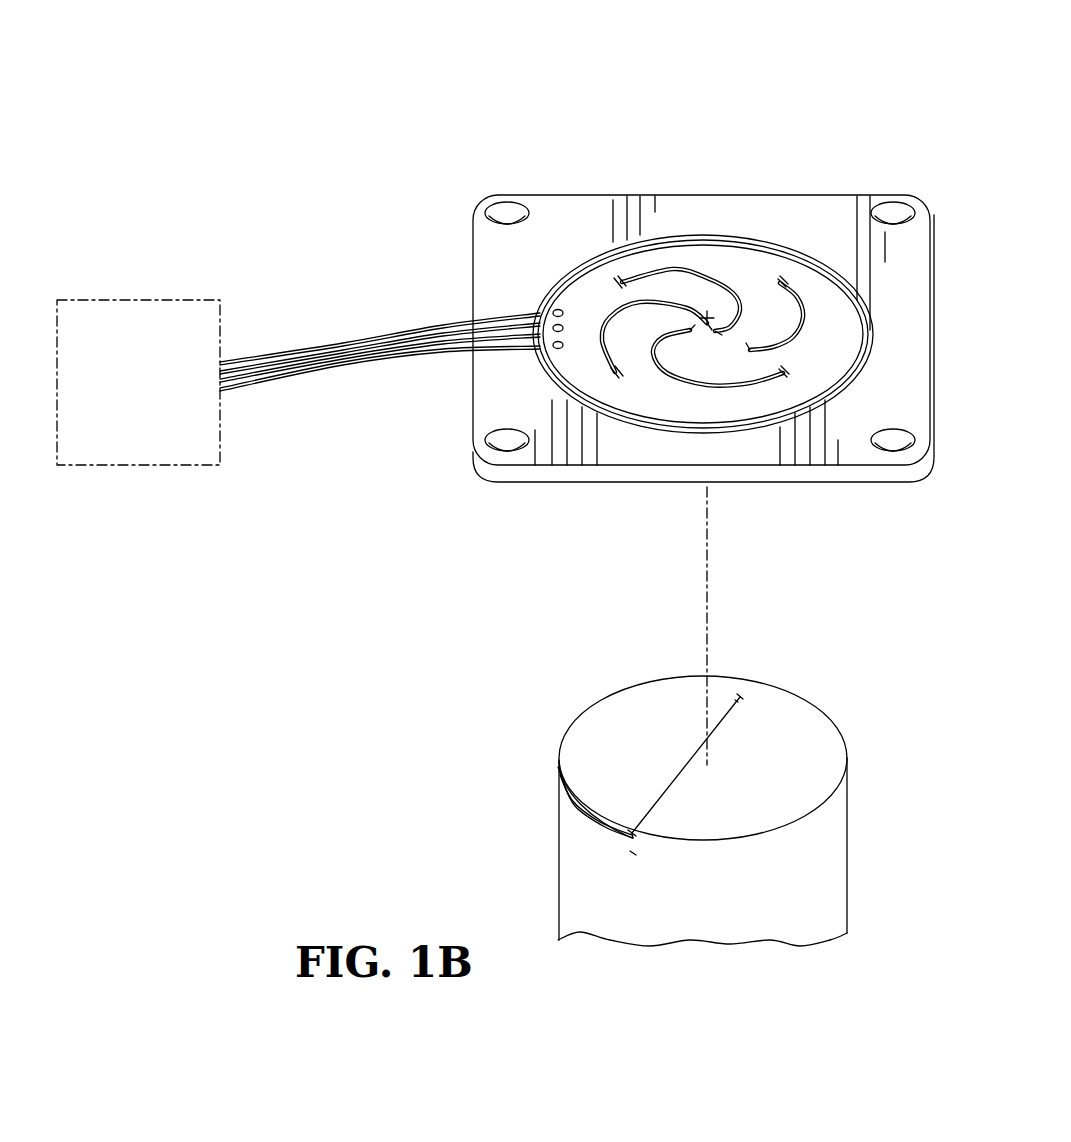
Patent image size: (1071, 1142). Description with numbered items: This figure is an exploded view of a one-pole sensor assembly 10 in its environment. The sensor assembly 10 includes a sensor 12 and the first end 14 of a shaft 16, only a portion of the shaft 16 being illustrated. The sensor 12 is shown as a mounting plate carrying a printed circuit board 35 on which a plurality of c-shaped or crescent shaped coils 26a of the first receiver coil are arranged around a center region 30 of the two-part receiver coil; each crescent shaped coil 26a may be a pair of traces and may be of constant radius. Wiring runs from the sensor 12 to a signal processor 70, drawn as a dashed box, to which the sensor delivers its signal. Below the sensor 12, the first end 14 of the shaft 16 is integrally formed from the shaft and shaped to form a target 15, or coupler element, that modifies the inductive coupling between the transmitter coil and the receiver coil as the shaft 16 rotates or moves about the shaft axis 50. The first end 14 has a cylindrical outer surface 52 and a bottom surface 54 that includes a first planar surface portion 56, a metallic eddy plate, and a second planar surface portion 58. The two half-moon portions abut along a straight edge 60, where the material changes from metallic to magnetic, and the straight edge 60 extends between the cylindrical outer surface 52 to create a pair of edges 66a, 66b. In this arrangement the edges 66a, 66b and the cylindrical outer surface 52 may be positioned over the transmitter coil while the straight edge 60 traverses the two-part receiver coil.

The sensor assembly 10 is at (243, 84).
The sensor 12 is at (878, 121).
The first end 14 is at (633, 853).
The target 15 is at (876, 722).
The shaft 16 is at (866, 676).
The crescent shaped coils 26a is at (610, 320).
The center region 30 is at (707, 313).
The printed circuit board 35 is at (597, 277).
The shaft axis 50 is at (707, 557).
The cylindrical outer surface 52 is at (837, 808).
The bottom surface 54 is at (620, 686).
The first planar surface portion 56 is at (570, 765).
The second planar surface portion 58 is at (770, 698).
The straight edge 60 is at (740, 698).
The edge 66a is at (633, 832).
The edge 66b is at (738, 694).
The signal processor 70 is at (112, 300).